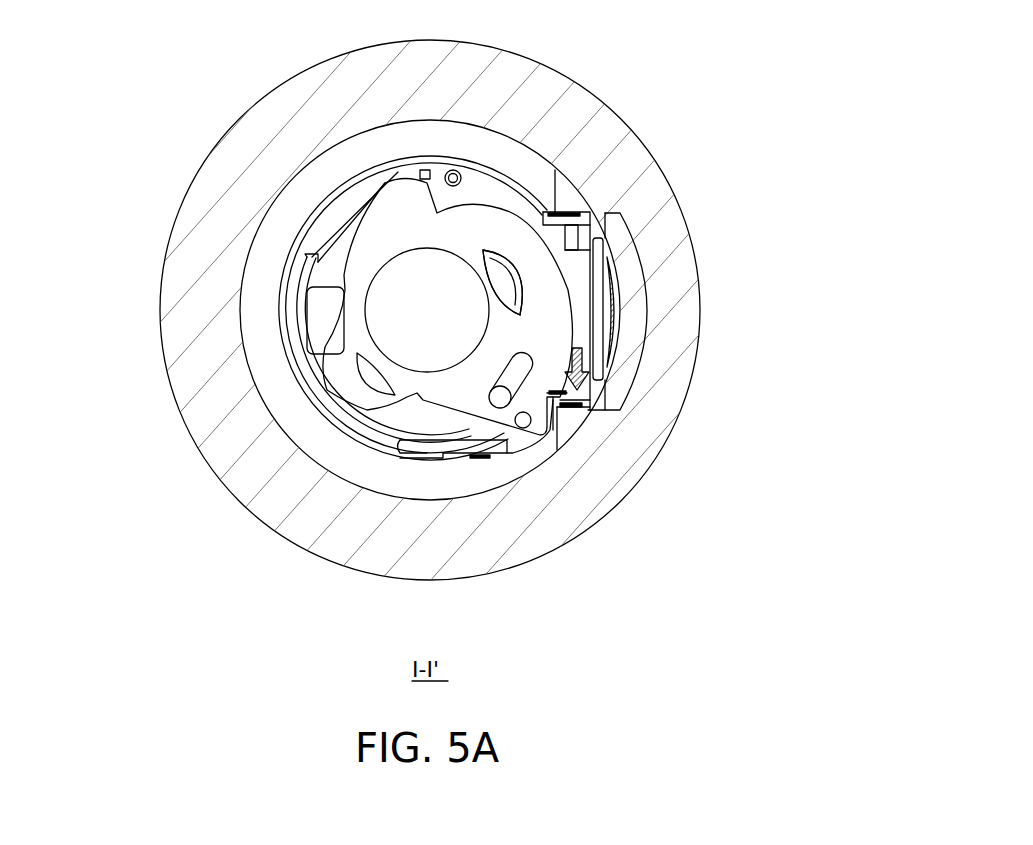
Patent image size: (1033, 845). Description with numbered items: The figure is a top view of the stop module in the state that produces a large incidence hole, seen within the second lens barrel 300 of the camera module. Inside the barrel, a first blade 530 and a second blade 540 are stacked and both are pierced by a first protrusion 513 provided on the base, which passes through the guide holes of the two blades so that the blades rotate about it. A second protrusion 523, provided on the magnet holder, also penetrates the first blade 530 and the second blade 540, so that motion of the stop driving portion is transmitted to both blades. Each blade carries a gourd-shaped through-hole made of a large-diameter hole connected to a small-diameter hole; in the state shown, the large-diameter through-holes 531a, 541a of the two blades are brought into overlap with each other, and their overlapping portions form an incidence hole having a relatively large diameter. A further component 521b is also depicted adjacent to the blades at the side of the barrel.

The second lens barrel 300 is at (580, 110).
The first blade 530 is at (350, 392).
The second blade 540 is at (385, 233).
The through-hole 531a is at (450, 305).
The through-hole 541a is at (560, 215).
The first protrusion 513 is at (523, 428).
The elastic plate 521b is at (605, 266).
The second protrusion 523 is at (500, 405).